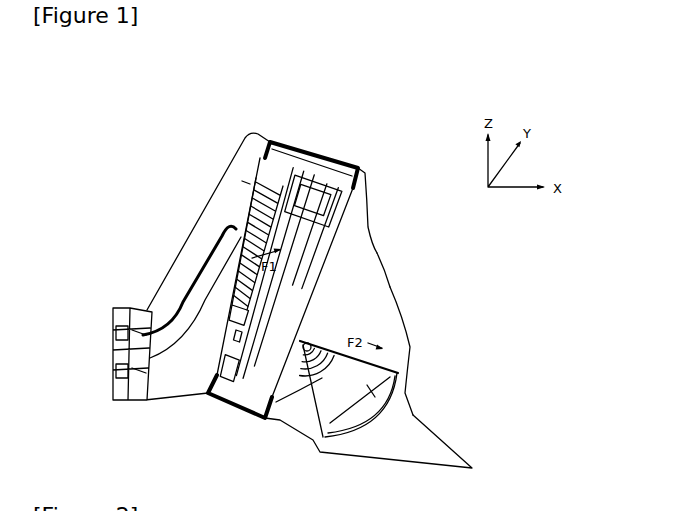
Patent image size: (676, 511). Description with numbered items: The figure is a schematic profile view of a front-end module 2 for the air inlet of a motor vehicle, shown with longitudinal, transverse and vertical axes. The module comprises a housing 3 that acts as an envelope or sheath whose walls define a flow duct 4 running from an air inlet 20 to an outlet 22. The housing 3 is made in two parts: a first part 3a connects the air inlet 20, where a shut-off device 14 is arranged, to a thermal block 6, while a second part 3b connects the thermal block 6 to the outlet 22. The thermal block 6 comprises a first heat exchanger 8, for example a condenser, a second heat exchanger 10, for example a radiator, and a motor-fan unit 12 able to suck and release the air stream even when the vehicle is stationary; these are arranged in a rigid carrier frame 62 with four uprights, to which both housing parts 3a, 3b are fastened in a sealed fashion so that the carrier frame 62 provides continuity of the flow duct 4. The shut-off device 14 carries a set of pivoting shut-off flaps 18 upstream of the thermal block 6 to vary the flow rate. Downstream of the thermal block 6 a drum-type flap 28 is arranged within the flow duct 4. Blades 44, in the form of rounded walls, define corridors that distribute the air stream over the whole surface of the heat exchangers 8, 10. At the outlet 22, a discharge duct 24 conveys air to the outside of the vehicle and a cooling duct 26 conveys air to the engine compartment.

The front-end module 2 is at (416, 166).
The housing 3 is at (233, 147).
The first part 3a is at (244, 182).
The second part 3b is at (362, 255).
The flow duct 4 is at (357, 279).
The thermal block 6 is at (317, 146).
The first heat exchanger 8 is at (250, 187).
The second heat exchanger 10 is at (315, 226).
The motor-fan unit 12 is at (313, 242).
The shut-off device 14 is at (120, 297).
The shut-off flaps 18 is at (117, 332).
The air inlet 20 is at (113, 370).
The outlet 22 is at (370, 357).
The discharge duct 24 is at (405, 442).
The cooling duct 26 is at (411, 318).
The flap 28 is at (377, 400).
The blades 44 is at (214, 248).
The carrier frame 62 is at (340, 163).